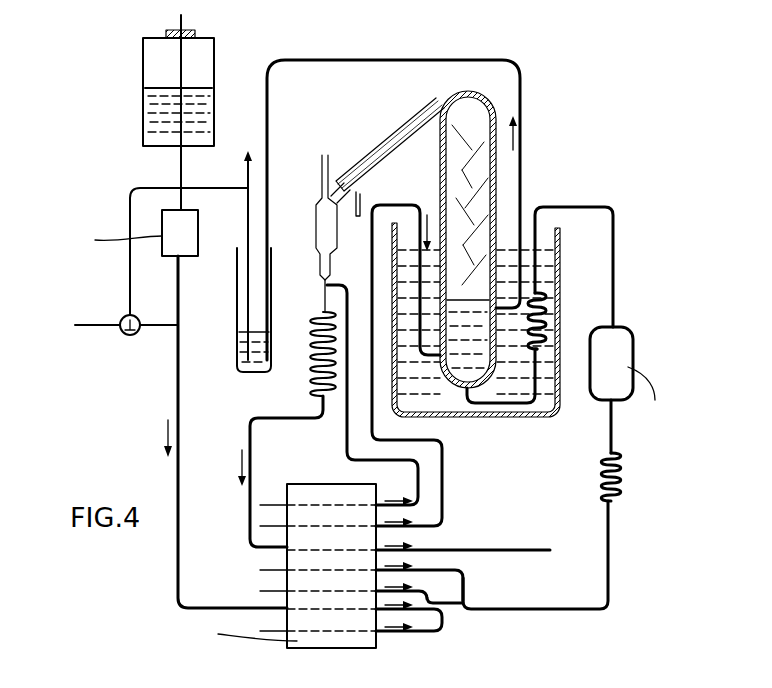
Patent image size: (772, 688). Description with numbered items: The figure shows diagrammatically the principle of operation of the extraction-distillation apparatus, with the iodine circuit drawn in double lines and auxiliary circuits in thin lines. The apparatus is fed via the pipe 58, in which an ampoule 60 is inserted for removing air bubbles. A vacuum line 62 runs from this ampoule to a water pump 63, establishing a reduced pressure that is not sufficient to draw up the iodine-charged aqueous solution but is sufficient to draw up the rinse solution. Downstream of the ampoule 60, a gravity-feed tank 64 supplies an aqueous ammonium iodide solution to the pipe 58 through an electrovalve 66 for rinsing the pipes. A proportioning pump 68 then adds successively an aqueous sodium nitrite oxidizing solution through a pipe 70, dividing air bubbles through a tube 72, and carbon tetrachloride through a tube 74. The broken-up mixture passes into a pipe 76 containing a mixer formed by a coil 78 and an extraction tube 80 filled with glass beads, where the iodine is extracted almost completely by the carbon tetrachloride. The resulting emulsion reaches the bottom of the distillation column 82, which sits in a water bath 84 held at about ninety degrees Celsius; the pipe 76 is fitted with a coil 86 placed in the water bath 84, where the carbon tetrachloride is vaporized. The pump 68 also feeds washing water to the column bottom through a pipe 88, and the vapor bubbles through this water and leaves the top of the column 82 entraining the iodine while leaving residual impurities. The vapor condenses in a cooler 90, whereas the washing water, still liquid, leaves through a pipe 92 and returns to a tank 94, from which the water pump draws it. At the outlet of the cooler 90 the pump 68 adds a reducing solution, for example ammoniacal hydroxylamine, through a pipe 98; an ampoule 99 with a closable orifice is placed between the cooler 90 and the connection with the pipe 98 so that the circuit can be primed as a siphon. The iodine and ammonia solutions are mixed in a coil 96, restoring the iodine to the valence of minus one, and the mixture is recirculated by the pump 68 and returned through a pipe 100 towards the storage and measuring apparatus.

The pipe 58 is at (103, 327).
The ampoule 60 is at (129, 334).
The vacuum line 62 is at (132, 198).
The water pump 63 is at (247, 192).
The gravity-feed tank 64 is at (148, 120).
The electrovalve 66 is at (192, 250).
The proportioning pump 68 is at (377, 652).
The pipe 70 is at (446, 627).
The tube 72 is at (430, 603).
The tube 74 is at (465, 597).
The pipe 76 is at (613, 298).
The coil 78 is at (600, 497).
The extraction tube 80 is at (622, 373).
The distillation column 82 is at (497, 176).
The water bath 84 is at (537, 415).
The coil 86 is at (548, 318).
The pipe 88 is at (440, 442).
The cooler 90 is at (385, 145).
The pipe 92 is at (538, 126).
The tank 94 is at (243, 367).
The coil 96 is at (316, 393).
The pipe 98 is at (345, 450).
The ampoule 99 is at (317, 233).
The pipe 100 is at (515, 550).